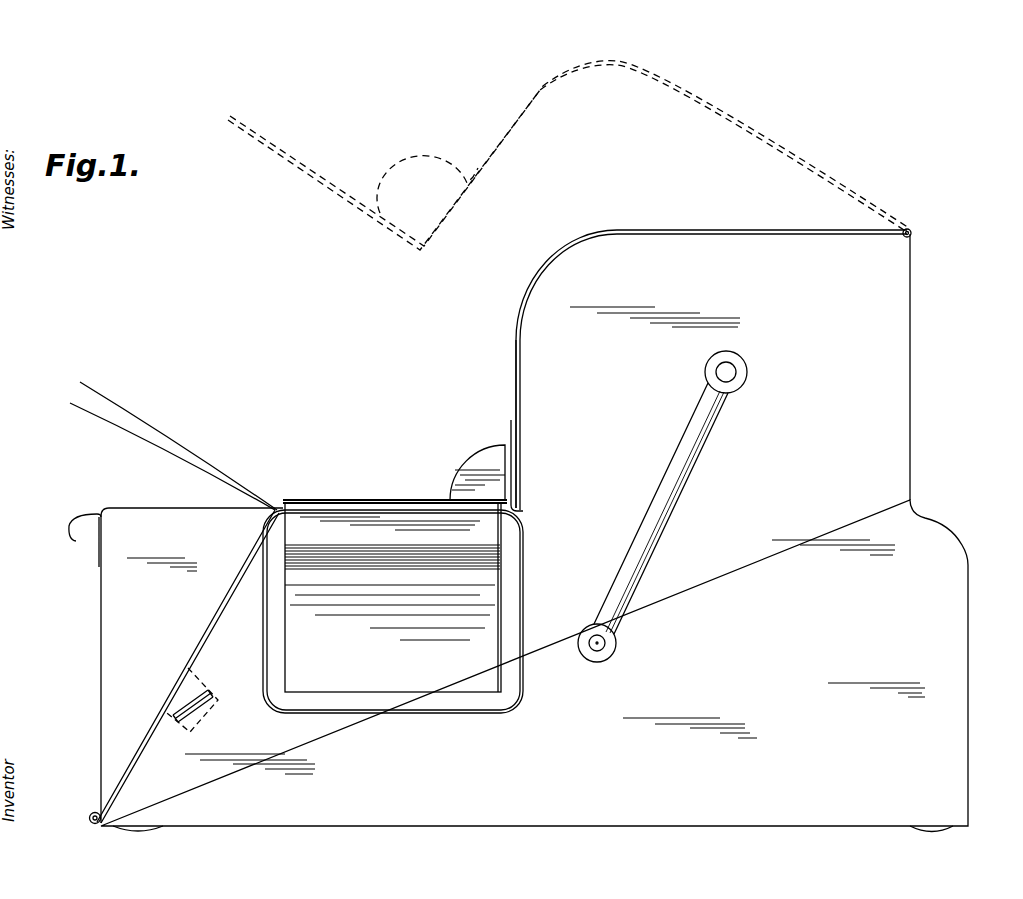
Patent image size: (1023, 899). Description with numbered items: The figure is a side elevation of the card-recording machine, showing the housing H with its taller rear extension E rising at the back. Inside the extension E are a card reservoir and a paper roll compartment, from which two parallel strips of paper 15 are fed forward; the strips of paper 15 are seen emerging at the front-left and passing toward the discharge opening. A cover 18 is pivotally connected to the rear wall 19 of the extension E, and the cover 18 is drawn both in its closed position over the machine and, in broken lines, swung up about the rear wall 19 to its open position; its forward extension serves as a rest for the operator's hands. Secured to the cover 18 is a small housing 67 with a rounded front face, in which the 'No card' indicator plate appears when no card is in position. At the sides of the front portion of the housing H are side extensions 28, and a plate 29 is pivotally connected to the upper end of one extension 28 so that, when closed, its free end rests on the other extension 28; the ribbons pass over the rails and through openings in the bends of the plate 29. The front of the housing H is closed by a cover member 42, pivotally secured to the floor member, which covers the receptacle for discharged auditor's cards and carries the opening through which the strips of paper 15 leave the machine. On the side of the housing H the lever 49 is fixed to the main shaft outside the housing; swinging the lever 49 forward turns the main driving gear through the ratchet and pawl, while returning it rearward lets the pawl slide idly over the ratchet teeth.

The strips of paper 15 is at (163, 438).
The cover 18 is at (612, 230).
The rear wall 19 is at (910, 298).
The side extensions 28 is at (393, 608).
The plate 29 is at (383, 483).
The cover member 42 is at (103, 623).
The lever 49 is at (687, 462).
The small housing 67 is at (477, 450).
The rear extension E is at (893, 378).
The housing H is at (990, 650).